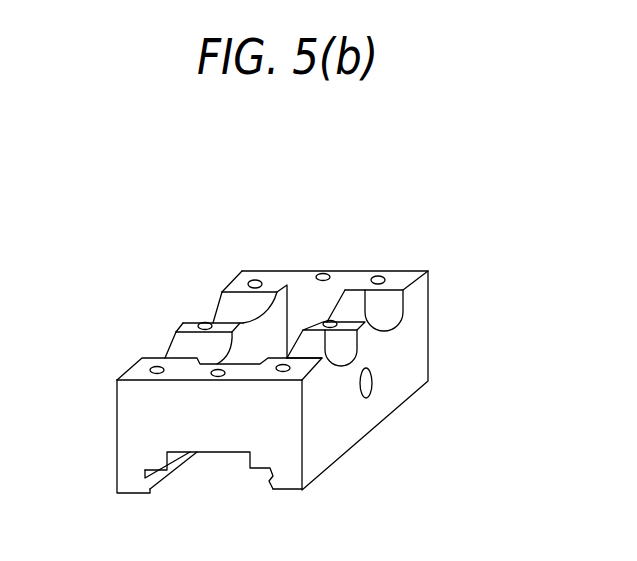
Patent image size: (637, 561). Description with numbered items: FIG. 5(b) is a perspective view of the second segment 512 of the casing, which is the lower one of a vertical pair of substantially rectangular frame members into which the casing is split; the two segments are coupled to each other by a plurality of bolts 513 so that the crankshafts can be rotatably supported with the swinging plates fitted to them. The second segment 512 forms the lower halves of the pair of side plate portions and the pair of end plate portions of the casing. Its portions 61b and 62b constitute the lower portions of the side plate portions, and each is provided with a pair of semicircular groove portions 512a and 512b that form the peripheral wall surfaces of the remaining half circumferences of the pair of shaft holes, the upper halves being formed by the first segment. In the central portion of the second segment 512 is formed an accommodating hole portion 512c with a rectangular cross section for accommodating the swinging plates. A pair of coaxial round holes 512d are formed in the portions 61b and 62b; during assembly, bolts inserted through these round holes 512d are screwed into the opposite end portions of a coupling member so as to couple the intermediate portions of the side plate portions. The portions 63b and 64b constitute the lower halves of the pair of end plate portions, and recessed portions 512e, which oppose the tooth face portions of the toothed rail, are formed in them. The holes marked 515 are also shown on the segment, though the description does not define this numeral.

The lower portion of side plate portion 61b is at (348, 438).
The lower portion of side plate portion 62b is at (128, 473).
The lower half of end plate portion 63b is at (153, 413).
The lower half of end plate portion 64b is at (324, 277).
The second segment 512 is at (406, 258).
The semicircular groove portion 512a is at (185, 347).
The semicircular groove portion 512b is at (228, 308).
The accommodating hole portion 512c is at (295, 296).
The round hole 512d is at (368, 385).
The recessed portion 512e is at (212, 452).
The bolt 513 is at (255, 283).
The positioning hole 515 is at (350, 268).